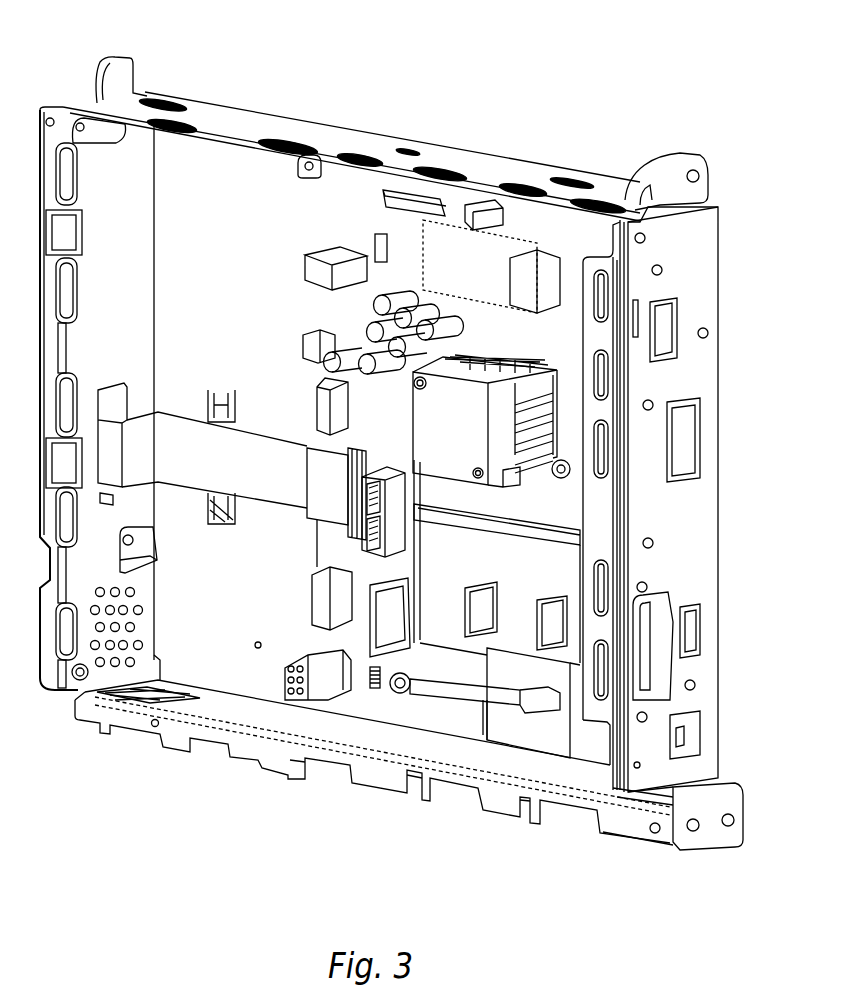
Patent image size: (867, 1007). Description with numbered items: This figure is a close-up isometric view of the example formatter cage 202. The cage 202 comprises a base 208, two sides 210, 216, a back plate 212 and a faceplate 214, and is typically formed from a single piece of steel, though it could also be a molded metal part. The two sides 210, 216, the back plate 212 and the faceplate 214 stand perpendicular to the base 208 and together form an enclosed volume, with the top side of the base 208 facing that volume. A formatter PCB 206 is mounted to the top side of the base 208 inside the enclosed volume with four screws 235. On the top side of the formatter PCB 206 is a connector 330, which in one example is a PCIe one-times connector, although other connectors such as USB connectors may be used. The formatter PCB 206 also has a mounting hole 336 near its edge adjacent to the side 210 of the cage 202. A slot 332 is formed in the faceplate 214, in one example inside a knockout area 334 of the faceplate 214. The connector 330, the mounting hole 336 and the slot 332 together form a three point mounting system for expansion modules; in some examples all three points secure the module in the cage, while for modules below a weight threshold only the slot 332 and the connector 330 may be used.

The formatter cage 202 is at (462, 88).
The formatter PCB 206 is at (508, 343).
The base 208 is at (250, 305).
The side 210 is at (290, 695).
The back plate 212 is at (127, 238).
The faceplate 214 is at (695, 513).
The side 216 is at (335, 140).
The screws 235 is at (311, 154).
The connector 330 is at (358, 547).
The slot 332 is at (647, 630).
The knockout area 334 is at (660, 665).
The mounting hole 336 is at (372, 695).